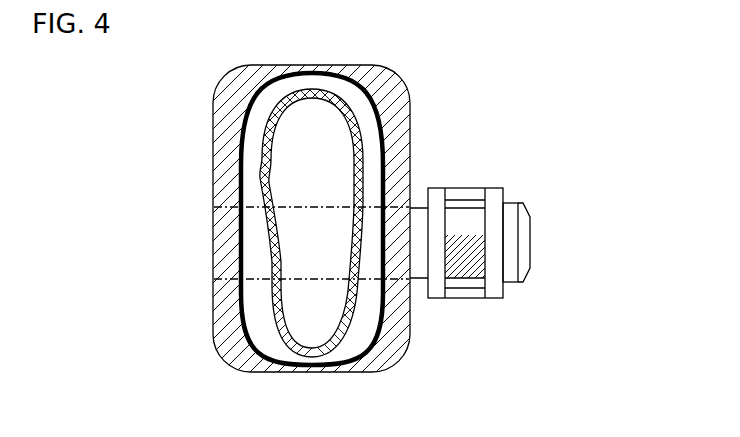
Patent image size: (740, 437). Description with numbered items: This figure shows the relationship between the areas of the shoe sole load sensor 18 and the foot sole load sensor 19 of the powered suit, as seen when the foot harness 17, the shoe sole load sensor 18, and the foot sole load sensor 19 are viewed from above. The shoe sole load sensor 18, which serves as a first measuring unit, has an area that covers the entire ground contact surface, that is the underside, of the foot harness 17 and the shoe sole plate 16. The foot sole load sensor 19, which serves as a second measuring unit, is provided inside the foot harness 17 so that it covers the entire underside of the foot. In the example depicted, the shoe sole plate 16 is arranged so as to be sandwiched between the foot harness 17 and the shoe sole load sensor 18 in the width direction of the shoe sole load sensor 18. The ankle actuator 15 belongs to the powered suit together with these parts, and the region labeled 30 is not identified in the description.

The ankle actuator 15 is at (524, 240).
The shoe sole plate 16 is at (417, 205).
The foot harness 17 is at (253, 113).
The shoe sole load sensor 18 is at (228, 322).
The foot sole load sensor 19 is at (262, 178).
The hollow space 30 is at (318, 138).